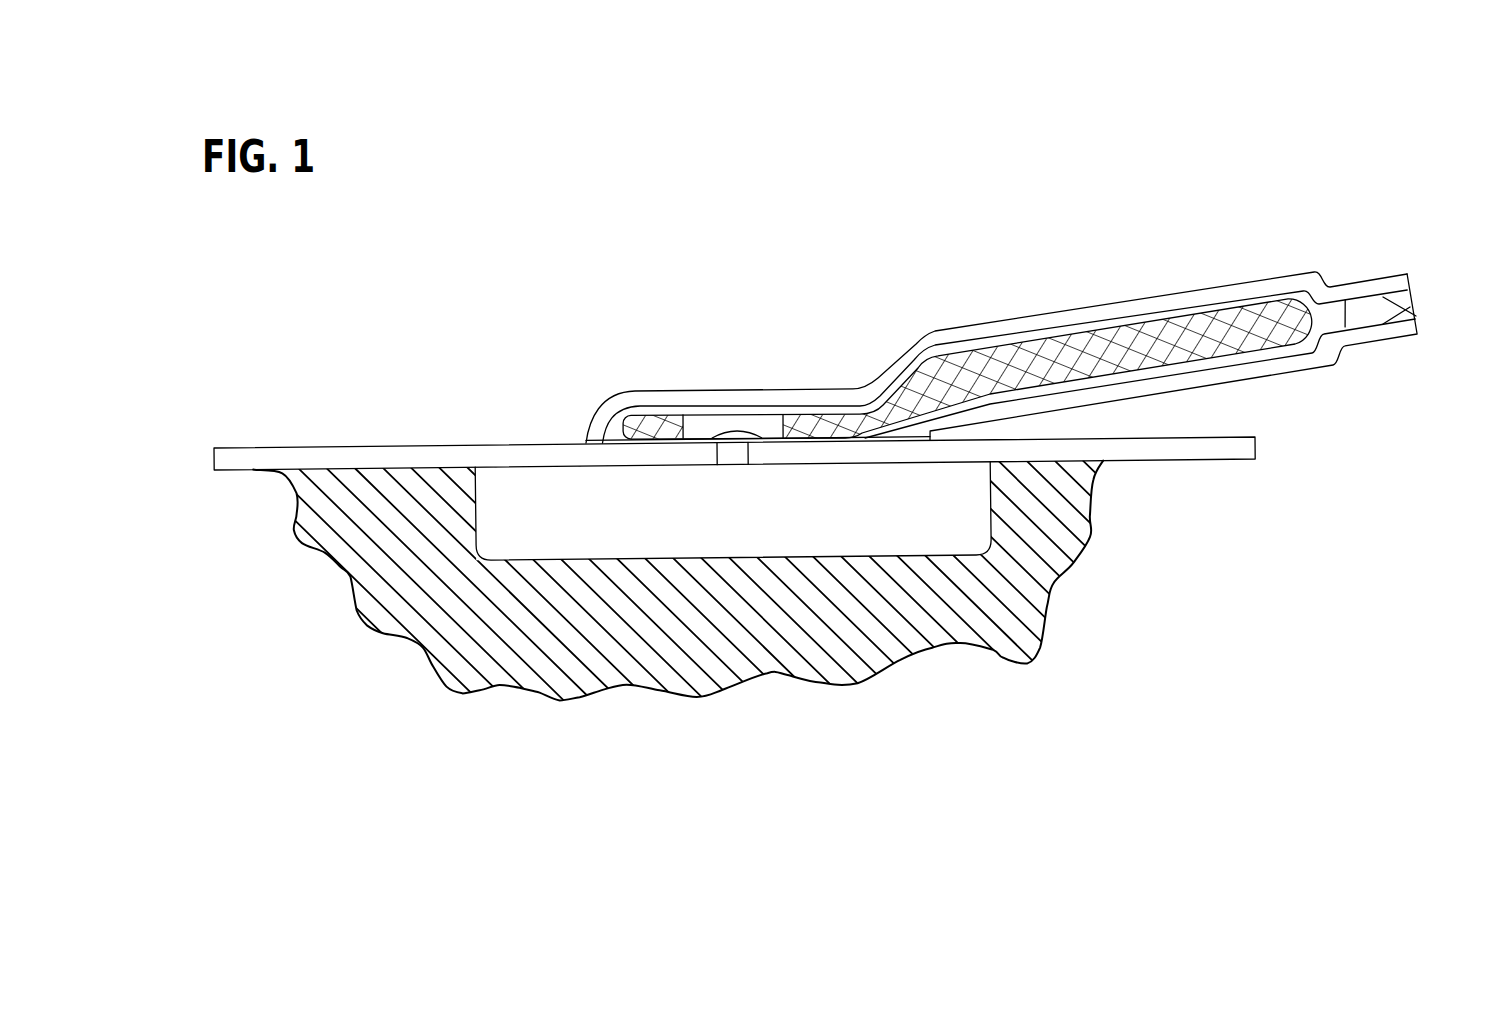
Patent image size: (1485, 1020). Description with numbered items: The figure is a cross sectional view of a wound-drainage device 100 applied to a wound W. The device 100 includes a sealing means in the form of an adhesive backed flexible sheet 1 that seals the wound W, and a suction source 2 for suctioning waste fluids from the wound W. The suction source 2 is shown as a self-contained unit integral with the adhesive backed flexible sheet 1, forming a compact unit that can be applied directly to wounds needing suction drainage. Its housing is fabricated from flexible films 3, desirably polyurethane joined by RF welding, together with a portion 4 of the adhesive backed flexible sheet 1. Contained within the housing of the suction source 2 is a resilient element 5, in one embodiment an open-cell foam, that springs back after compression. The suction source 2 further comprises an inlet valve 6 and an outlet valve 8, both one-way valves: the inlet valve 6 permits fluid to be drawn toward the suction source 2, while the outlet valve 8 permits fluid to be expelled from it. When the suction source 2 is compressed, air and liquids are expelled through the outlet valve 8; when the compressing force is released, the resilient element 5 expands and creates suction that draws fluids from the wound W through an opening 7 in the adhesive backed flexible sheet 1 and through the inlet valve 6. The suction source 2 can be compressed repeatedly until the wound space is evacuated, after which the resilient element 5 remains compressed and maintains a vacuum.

The device 100 is at (866, 183).
The adhesive backed flexible sheet 1 is at (214, 453).
The suction source 2 is at (897, 304).
The flexible films 3 is at (1268, 278).
The portion of the adhesive backed flexible sheet 4 is at (645, 471).
The resilient element 5 is at (1161, 332).
The inlet valve 6 is at (737, 430).
The opening 7 is at (732, 456).
The outlet valve 8 is at (1410, 307).
The wound W is at (949, 520).